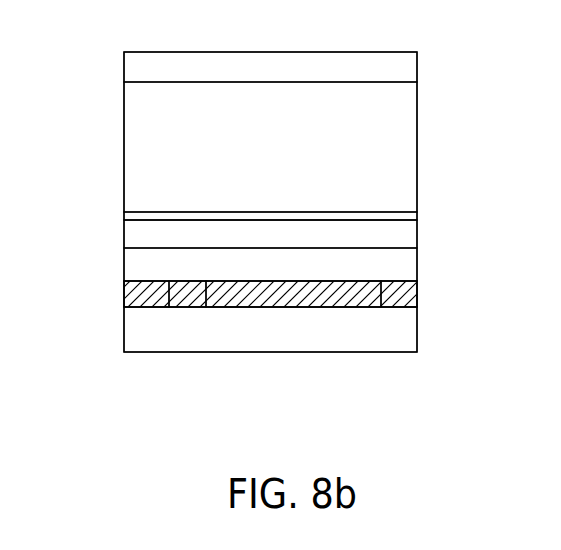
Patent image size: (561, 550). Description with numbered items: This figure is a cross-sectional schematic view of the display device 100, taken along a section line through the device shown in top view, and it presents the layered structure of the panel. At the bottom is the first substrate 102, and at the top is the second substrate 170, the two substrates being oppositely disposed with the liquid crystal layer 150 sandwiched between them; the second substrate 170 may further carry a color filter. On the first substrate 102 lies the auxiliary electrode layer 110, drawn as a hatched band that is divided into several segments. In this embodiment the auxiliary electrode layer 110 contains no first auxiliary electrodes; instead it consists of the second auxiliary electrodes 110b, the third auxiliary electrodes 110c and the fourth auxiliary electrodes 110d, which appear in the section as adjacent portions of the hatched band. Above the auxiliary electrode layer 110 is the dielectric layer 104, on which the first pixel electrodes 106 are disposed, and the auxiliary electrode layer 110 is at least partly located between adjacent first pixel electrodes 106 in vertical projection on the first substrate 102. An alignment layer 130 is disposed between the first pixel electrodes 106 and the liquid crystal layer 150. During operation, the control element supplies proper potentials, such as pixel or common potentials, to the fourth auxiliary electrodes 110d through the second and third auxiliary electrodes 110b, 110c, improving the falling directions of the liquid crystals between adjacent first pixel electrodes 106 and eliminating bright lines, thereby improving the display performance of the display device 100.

The display device 100 is at (76, 50).
The second substrate 170 is at (393, 70).
The liquid crystal layer 150 is at (393, 122).
The alignment layer 130 is at (404, 218).
The first pixel electrodes 106 is at (407, 240).
The dielectric layer 104 is at (393, 272).
The first substrate 102 is at (393, 336).
The auxiliary electrode layer 110 is at (402, 403).
The fourth auxiliary electrodes 110d is at (150, 307).
The third auxiliary electrodes 110c is at (192, 300).
The second auxiliary electrodes 110b is at (392, 300).